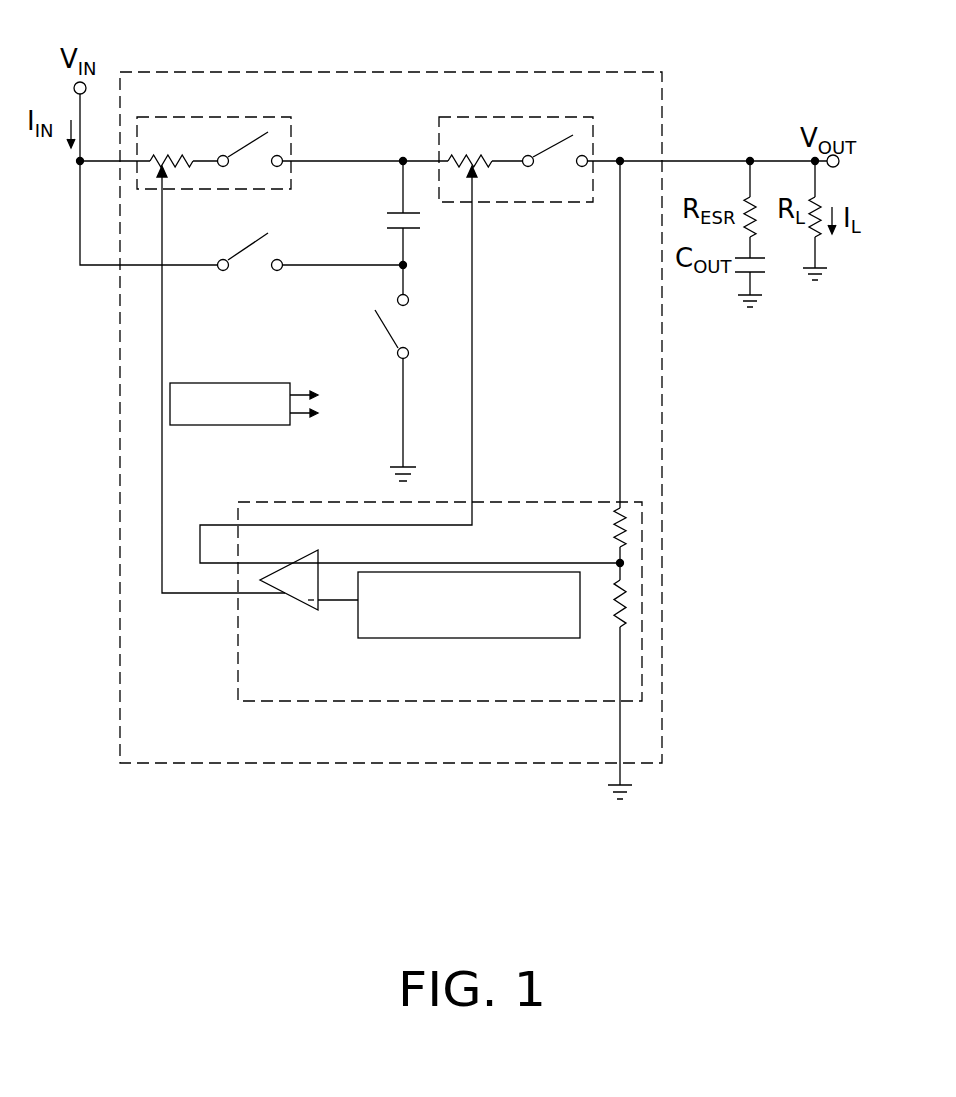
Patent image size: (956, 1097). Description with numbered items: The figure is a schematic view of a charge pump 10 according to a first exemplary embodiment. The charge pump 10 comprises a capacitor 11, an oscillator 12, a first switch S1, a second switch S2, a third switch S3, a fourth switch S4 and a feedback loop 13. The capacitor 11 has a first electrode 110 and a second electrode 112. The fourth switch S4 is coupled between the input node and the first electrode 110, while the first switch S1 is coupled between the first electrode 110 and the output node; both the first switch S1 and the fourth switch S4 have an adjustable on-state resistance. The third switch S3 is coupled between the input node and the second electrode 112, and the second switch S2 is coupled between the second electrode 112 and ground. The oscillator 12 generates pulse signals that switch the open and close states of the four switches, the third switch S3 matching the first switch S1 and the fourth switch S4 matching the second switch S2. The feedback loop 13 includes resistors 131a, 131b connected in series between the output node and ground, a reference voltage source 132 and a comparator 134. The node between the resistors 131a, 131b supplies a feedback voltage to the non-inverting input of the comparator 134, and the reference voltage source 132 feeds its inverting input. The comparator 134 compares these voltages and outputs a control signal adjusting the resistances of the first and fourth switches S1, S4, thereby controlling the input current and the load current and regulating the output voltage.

The charge pump 10 is at (520, 82).
The capacitor 11 is at (350, 218).
The first electrode 110 is at (397, 212).
The second electrode 112 is at (397, 230).
The oscillator 12 is at (218, 382).
The feedback loop 13 is at (495, 518).
The resistor 131a is at (615, 532).
The resistor 131b is at (617, 620).
The reference voltage source 132 is at (468, 627).
The comparator 134 is at (305, 557).
The first switch S1 is at (553, 123).
The second switch S2 is at (393, 337).
The third switch S3 is at (247, 253).
The fourth switch S4 is at (273, 123).